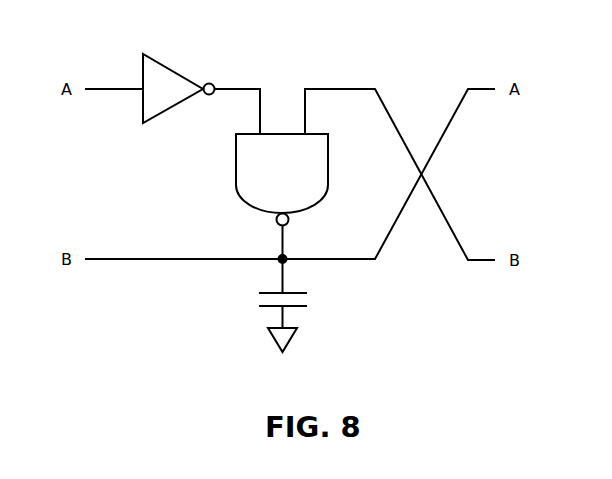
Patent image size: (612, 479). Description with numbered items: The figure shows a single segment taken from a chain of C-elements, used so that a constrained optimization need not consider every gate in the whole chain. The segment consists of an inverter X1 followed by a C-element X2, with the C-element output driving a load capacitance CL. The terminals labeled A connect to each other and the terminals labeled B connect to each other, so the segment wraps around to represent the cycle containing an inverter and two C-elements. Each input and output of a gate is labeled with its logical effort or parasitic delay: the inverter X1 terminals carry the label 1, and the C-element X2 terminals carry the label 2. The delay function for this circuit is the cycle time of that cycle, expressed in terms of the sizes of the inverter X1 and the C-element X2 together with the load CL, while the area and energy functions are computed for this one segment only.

The logical effort label 1 is at (176, 88).
The logical effort label 2 is at (282, 182).
The inverter X1 is at (176, 77).
The C-element X2 is at (262, 182).
The load capacitance CL is at (300, 322).